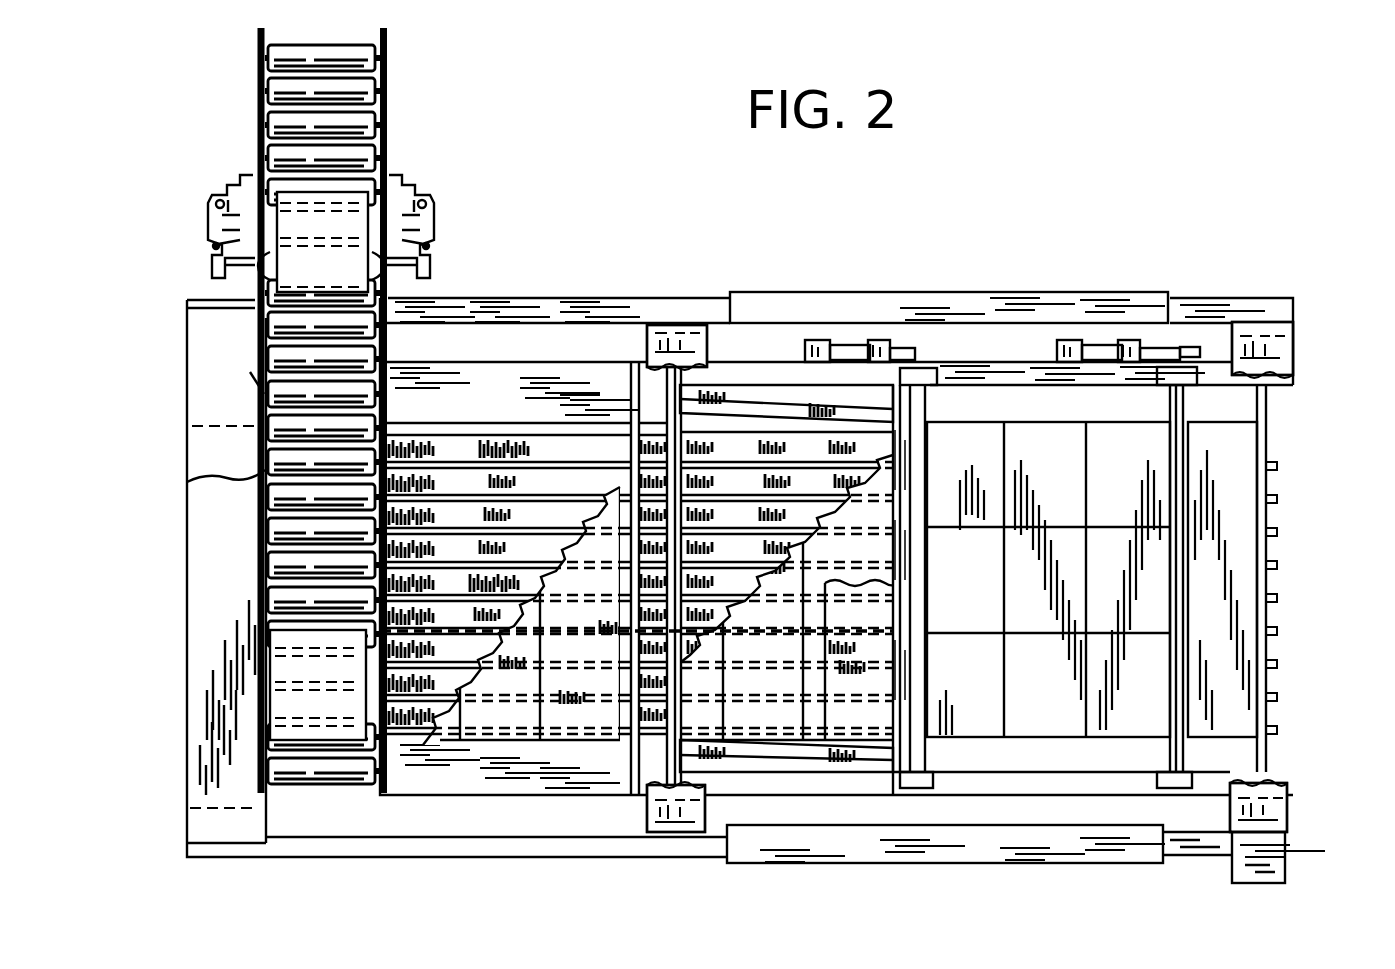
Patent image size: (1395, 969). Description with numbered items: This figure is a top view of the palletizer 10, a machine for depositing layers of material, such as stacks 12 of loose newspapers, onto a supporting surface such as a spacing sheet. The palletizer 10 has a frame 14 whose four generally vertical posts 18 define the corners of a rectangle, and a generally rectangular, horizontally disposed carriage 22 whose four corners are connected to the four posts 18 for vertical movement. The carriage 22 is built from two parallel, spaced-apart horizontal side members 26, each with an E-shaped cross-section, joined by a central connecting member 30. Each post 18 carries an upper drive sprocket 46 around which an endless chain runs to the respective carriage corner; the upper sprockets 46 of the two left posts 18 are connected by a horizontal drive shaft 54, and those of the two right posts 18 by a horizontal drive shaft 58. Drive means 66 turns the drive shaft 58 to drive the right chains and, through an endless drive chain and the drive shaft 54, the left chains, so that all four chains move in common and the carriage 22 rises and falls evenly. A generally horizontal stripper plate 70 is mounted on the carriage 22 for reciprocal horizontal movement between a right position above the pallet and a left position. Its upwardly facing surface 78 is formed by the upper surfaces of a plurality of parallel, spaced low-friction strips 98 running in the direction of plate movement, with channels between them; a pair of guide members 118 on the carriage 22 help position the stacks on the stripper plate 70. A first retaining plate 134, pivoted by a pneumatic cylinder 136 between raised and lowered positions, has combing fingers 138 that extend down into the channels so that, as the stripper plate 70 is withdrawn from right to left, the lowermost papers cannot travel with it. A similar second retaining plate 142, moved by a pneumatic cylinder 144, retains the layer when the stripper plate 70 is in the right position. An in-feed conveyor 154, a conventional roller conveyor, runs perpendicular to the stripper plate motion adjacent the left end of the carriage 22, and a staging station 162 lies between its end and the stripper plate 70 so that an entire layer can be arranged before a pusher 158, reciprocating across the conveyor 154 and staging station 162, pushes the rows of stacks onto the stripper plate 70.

The palletizer 10 is at (812, 266).
The stacks 12 is at (362, 185).
The frame 14 is at (1012, 304).
The posts 18 is at (695, 327).
The carriage 22 is at (1072, 782).
The side members 26 is at (1034, 370).
The central connecting member 30 is at (912, 412).
The upper drive sprocket 46 is at (647, 343).
The drive shaft 54 is at (620, 497).
The drive shaft 58 is at (1268, 403).
The drive means 66 is at (1280, 845).
The stripper plate 70 is at (867, 450).
The upwardly facing surface 78 is at (820, 510).
The low-friction strips 98 is at (800, 545).
The guide members 118 is at (770, 400).
The first retaining plate 134 is at (865, 612).
The pneumatic cylinder 136 is at (843, 340).
The combing fingers 138 is at (817, 693).
The second retaining plate 142 is at (1240, 593).
The pneumatic cylinder 144 is at (1100, 340).
The in-feed conveyor 154 is at (422, 122).
The pusher 158 is at (266, 465).
The staging station 162 is at (490, 455).